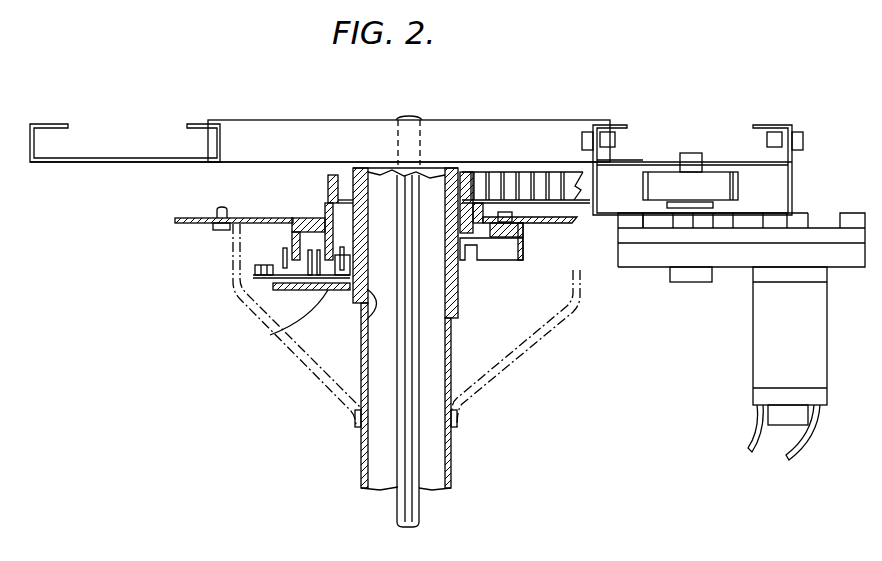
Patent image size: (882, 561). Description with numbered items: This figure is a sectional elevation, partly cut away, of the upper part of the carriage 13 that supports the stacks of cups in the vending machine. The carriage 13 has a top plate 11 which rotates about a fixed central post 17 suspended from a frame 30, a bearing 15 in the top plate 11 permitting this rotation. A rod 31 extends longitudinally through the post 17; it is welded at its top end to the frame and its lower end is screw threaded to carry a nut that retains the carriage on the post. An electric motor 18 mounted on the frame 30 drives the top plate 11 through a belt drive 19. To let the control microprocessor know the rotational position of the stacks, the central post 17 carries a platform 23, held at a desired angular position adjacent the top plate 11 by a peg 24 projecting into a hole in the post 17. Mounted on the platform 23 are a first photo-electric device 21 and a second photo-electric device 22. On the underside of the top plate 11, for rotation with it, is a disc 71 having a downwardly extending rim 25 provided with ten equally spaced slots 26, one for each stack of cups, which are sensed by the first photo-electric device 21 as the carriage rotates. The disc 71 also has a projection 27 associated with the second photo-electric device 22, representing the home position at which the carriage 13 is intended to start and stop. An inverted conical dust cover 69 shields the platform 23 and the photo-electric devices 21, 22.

The top plate 11 is at (182, 217).
The carriage 13 is at (172, 233).
The bearing 15 is at (357, 175).
The central post 17 is at (360, 448).
The electric motor 18 is at (815, 350).
The belt drive 19 is at (545, 178).
The first photo-electric device 21 is at (283, 251).
The second photo-electric device 22 is at (328, 278).
The platform 23 is at (280, 288).
The peg 24 is at (368, 312).
The rim 25 is at (524, 232).
The slots 26 is at (473, 250).
The projection 27 is at (305, 220).
The frame 30 is at (600, 125).
The rod 31 is at (397, 505).
The inverted conical dust cover 69 is at (513, 356).
The disc 71 is at (296, 217).